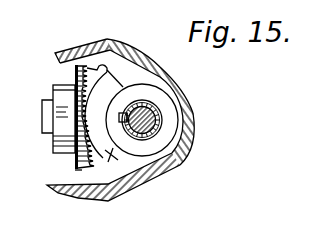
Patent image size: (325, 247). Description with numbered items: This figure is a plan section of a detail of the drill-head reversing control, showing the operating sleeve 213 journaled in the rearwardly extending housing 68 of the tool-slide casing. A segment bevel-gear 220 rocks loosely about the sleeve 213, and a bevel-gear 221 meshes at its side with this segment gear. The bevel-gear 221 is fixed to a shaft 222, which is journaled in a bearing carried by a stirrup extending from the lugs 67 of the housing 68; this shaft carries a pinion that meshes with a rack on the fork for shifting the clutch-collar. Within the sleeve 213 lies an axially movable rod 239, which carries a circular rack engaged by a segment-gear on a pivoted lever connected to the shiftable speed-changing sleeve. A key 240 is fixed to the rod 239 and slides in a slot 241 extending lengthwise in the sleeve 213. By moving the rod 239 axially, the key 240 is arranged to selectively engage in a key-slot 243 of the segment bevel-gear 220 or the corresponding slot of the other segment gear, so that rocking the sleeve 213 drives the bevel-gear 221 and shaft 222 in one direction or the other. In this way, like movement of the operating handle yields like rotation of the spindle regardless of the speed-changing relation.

The lugs 67 is at (66, 56).
The rear housing 68 is at (168, 74).
The operating sleeve 213 is at (160, 119).
The segment bevel-gear 220 is at (112, 153).
The bevel-gear 221 is at (78, 151).
The shaft 222 is at (43, 131).
The axially movable rod 239 is at (161, 110).
The key 240 is at (160, 149).
The slot 241 is at (125, 109).
The key-slot 243 is at (122, 112).